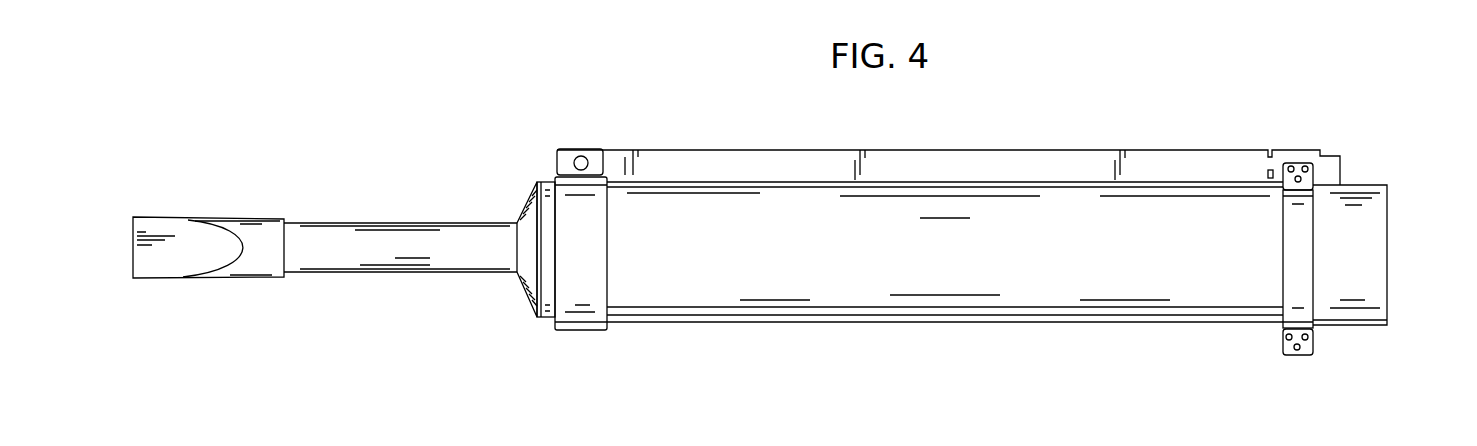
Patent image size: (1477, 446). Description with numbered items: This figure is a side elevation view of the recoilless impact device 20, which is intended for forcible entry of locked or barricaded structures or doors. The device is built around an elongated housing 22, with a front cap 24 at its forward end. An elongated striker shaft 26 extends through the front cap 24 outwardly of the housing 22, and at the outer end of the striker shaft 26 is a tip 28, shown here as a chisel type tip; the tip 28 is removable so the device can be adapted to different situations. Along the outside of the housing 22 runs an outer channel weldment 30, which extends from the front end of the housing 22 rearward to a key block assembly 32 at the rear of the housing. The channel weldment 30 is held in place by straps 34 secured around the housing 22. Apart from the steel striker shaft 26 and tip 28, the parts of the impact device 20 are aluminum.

The impact device 20 is at (1033, 137).
The housing 22 is at (1045, 272).
The front cap 24 is at (527, 207).
The striker shaft 26 is at (402, 267).
The tip 28 is at (235, 225).
The outer channel weldment 30 is at (703, 155).
The key block assembly 32 is at (1299, 151).
The straps 34 is at (583, 323).